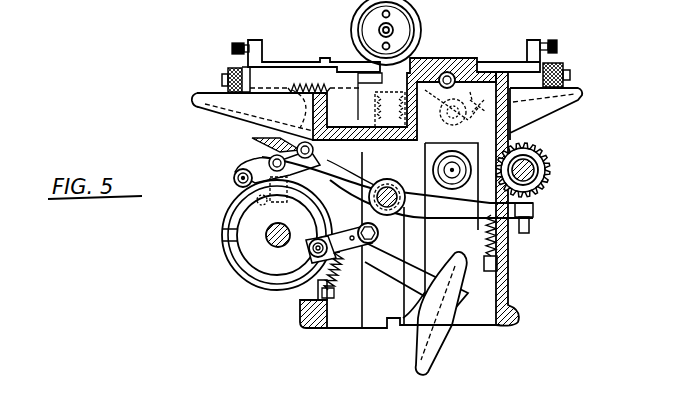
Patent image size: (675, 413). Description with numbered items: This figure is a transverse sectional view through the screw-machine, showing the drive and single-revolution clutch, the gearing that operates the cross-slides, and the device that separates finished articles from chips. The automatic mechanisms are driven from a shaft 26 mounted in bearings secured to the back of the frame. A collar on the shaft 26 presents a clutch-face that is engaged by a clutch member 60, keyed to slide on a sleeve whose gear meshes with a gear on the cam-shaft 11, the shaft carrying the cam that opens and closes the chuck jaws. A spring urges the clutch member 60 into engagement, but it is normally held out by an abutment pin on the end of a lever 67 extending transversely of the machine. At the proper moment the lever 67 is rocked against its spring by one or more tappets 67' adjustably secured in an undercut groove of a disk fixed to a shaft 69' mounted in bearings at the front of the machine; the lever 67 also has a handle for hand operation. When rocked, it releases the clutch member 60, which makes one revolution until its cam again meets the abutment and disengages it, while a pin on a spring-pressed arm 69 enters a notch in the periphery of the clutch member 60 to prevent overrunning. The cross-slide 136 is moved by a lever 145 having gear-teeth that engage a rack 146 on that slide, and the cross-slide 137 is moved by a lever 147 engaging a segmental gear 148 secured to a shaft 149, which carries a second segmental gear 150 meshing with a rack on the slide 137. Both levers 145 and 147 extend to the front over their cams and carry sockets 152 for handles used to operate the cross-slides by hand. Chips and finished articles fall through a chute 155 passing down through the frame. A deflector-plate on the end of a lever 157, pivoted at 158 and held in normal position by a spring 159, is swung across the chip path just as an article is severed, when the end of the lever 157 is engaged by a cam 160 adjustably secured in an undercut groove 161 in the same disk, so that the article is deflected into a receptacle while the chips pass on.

The cam-shaft 11 is at (452, 172).
The shaft 26 is at (532, 167).
The clutch member 60 is at (552, 165).
The lever 67 is at (410, 182).
The tappet 67' is at (222, 189).
The spring-pressed arm 69 is at (341, 235).
The shaft 69' is at (263, 235).
The cross-slide 136 is at (293, 67).
The cross-slide 137 is at (503, 62).
The lever 145 is at (297, 112).
The rack 146 is at (331, 84).
The lever 147 is at (376, 180).
The segmental gear 148 is at (430, 130).
The shaft 149 is at (446, 107).
The second segmental gear 150 is at (470, 121).
The socket 152 is at (245, 140).
The chute 155 is at (386, 303).
The lever 157 is at (490, 72).
The pivot 158 is at (396, 240).
The spring 159 is at (334, 289).
The cam 160 is at (316, 258).
The undercut groove 161 is at (247, 272).